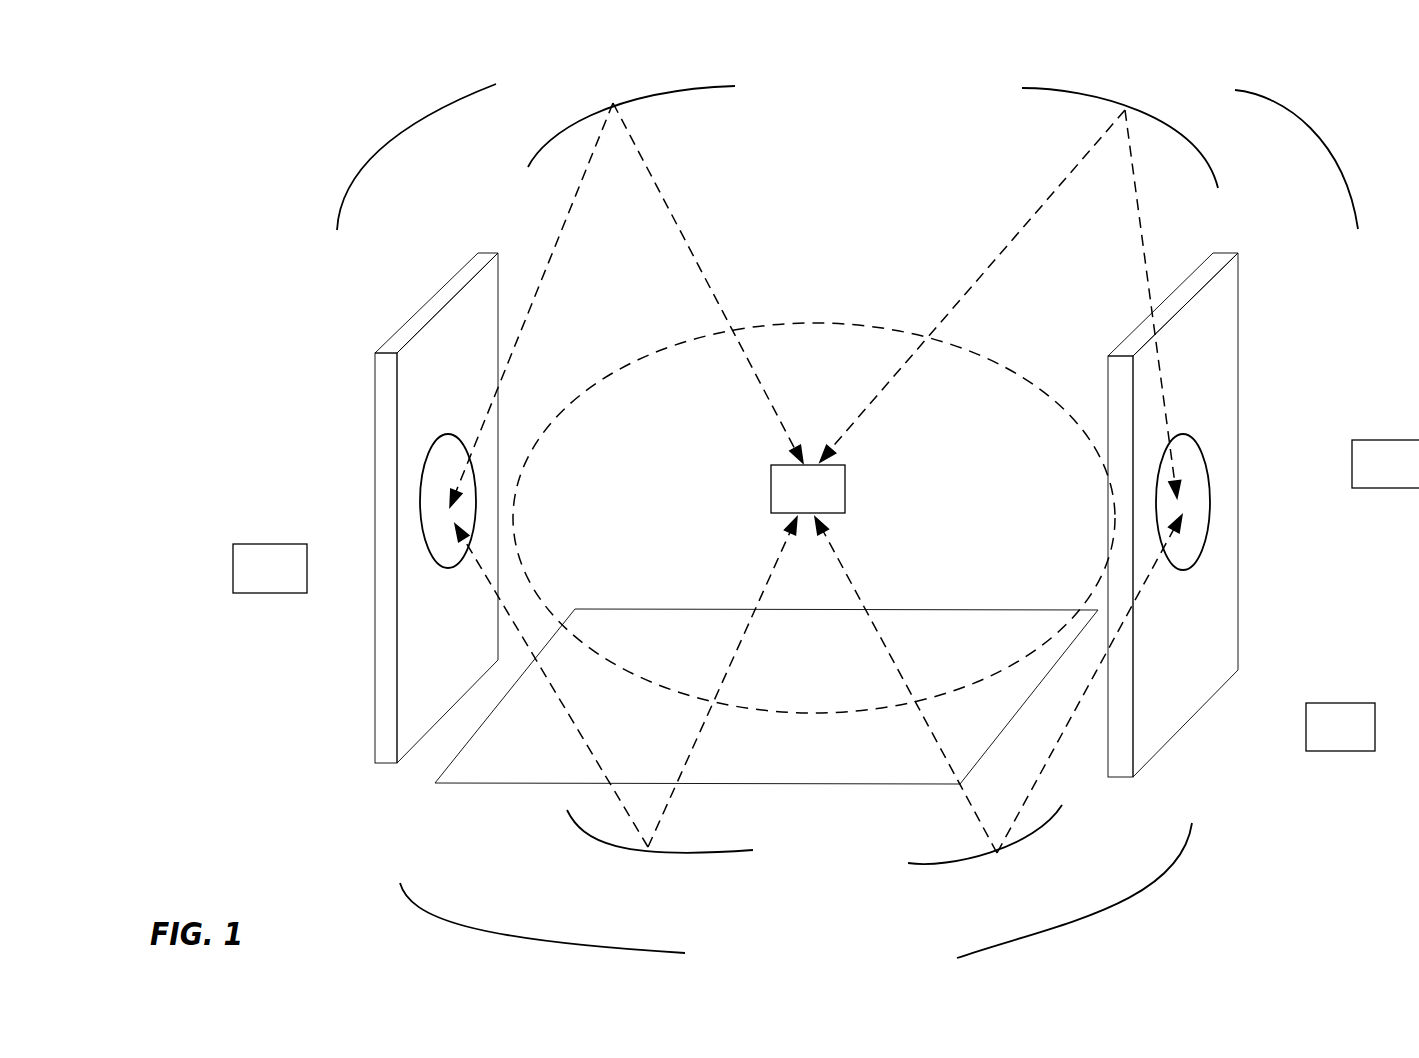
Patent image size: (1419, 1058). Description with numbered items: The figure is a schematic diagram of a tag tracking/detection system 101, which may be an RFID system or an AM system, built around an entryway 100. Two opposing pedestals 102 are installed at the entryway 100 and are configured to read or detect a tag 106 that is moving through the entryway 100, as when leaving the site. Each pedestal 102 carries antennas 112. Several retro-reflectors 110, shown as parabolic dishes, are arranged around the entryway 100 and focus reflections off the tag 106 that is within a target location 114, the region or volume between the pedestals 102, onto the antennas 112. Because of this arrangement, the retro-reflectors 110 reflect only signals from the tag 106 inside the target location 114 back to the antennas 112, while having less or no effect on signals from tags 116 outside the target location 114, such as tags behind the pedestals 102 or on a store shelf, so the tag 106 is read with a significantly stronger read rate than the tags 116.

The tag tracking/detection system 101 is at (203, 99).
The entryway 100 is at (917, 609).
The pedestals 102 is at (375, 468).
The tag 106 is at (808, 489).
The retro-reflectors 110 is at (422, 118).
The antennas 112 is at (447, 434).
The target location 114 is at (817, 323).
The tags 116 is at (826, 595).